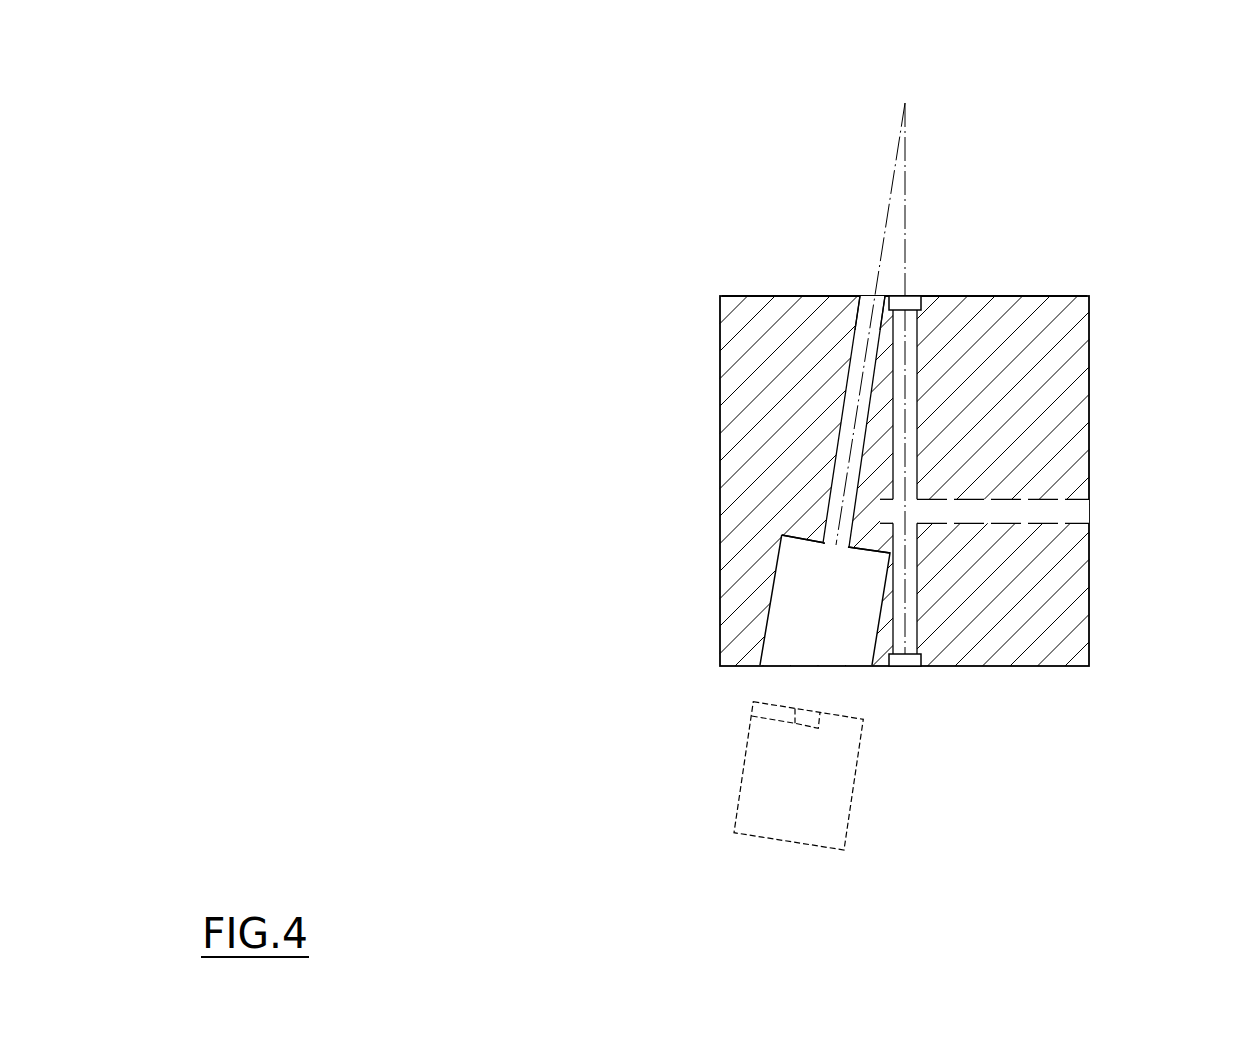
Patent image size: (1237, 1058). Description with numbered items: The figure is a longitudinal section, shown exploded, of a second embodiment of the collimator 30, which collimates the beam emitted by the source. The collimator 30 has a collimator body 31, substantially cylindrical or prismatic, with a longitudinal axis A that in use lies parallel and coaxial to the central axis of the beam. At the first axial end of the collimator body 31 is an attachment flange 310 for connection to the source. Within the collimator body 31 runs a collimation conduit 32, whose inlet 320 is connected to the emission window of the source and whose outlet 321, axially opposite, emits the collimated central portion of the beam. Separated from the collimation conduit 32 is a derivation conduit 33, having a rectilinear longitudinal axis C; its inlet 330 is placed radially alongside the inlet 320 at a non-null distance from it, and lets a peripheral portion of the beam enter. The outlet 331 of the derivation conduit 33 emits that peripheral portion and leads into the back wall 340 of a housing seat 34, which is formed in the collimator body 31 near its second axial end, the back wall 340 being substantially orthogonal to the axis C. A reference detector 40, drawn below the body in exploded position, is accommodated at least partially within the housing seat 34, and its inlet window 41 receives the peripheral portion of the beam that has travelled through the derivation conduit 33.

The collimator 30 is at (773, 353).
The collimator body 31 is at (757, 313).
The attachment flange 310 is at (1010, 297).
The collimation conduit 32 is at (918, 402).
The inlet of collimation conduit 320 is at (908, 297).
The outlet of collimation conduit 321 is at (910, 668).
The derivation conduit 33 is at (835, 445).
The inlet of derivation conduit 330 is at (866, 296).
The outlet of derivation conduit 331 is at (838, 543).
The housing seat 34 is at (785, 635).
The back wall 340 is at (890, 552).
The reference detector 40 is at (728, 790).
The inlet window 41 is at (795, 712).
The longitudinal axis A is at (905, 471).
The longitudinal axis of derivation conduit C is at (860, 375).